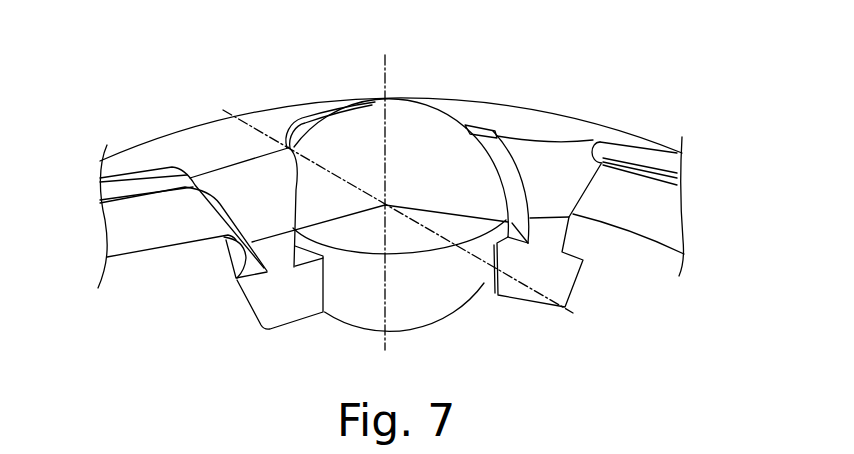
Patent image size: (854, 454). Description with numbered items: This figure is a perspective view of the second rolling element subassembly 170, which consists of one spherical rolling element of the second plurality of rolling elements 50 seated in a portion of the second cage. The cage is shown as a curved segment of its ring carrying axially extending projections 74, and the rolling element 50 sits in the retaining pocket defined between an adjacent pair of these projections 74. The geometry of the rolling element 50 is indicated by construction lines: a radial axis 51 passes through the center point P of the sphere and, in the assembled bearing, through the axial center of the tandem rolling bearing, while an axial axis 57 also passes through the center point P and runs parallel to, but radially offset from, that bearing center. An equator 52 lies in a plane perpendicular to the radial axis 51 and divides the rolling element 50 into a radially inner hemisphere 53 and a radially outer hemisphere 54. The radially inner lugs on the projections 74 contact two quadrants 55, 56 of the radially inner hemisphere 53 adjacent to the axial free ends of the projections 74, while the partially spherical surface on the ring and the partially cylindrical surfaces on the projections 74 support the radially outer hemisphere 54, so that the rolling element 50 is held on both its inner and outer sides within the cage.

The second rolling element subassembly 170 is at (636, 120).
The axially extending projections 74 is at (230, 170).
The axial axis 57 is at (228, 118).
The radially outer hemisphere 54 is at (352, 102).
The second plurality of rolling elements 50 is at (467, 127).
The radial axis 51 is at (387, 72).
The center point P is at (385, 203).
The quadrant 55 is at (328, 315).
The quadrant 56 is at (435, 318).
The equator 52 is at (487, 228).
The radially inner hemisphere 53 is at (472, 312).